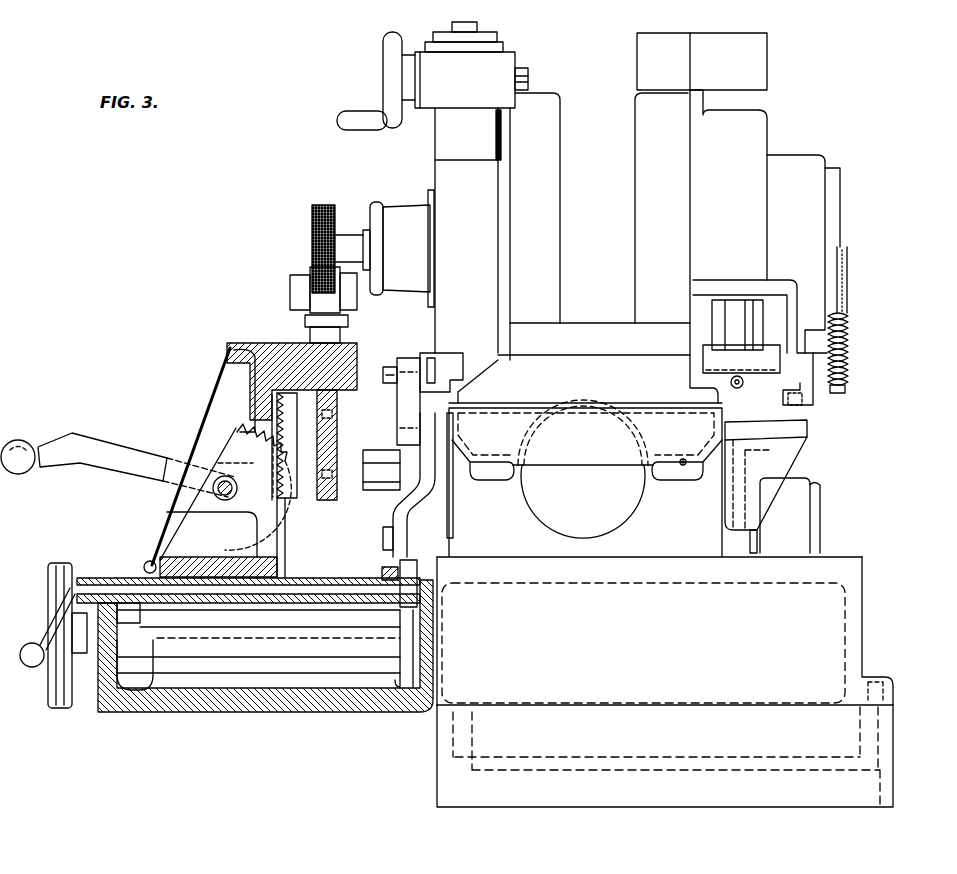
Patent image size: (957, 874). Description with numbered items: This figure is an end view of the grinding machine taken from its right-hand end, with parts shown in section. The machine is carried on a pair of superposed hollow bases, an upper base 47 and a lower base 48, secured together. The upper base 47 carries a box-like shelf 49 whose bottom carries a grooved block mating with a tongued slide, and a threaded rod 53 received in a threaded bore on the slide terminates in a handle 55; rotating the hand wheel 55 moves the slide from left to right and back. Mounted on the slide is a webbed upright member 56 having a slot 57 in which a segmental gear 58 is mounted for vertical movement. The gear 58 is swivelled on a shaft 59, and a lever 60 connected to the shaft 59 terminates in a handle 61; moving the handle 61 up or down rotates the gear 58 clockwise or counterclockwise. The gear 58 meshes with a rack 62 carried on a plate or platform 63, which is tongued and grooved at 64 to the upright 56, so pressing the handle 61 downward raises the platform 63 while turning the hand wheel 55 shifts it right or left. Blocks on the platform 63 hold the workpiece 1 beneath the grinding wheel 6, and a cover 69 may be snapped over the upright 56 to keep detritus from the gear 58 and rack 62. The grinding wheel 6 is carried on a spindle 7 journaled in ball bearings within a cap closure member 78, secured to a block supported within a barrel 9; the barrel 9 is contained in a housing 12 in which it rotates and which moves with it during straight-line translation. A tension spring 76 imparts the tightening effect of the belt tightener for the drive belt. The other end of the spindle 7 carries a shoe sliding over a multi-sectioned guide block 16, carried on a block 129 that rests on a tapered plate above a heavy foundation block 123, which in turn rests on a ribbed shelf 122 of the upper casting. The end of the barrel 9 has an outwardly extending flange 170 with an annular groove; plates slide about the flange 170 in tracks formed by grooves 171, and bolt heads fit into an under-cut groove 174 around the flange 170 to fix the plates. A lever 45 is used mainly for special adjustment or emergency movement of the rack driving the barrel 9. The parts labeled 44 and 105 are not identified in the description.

The workpiece 1 is at (290, 301).
The grinding wheel 6 is at (333, 207).
The spindle 7 is at (347, 248).
The barrel 9 is at (445, 320).
The housing 12 is at (604, 168).
The guide block 16 is at (775, 305).
The bent lever 44 is at (393, 522).
The lever 45 is at (40, 626).
The upper base 47 is at (855, 633).
The lower base 48 is at (893, 756).
The box-like shelf 49 is at (333, 712).
The threaded rod 53 is at (134, 640).
The handle 55 is at (58, 563).
The webbed upright member 56 is at (222, 394).
The slot 57 is at (260, 538).
The segmental gear 58 is at (238, 440).
The shaft 59 is at (222, 500).
The lever 60 is at (113, 445).
The handle 61 is at (27, 452).
The rack 62 is at (336, 431).
The platform 63 is at (348, 344).
The tongue and groove 64 is at (286, 568).
The cover 69 is at (220, 378).
The tension spring 76 is at (848, 342).
The cap closure member 78 is at (412, 210).
The hand crank 105 is at (392, 66).
The ribbed shelf 122 is at (805, 431).
The foundation block 123 is at (776, 396).
The block 129 is at (752, 375).
The flange 170 is at (430, 346).
The grooves 171 is at (412, 398).
The under-cut groove 174 is at (437, 366).